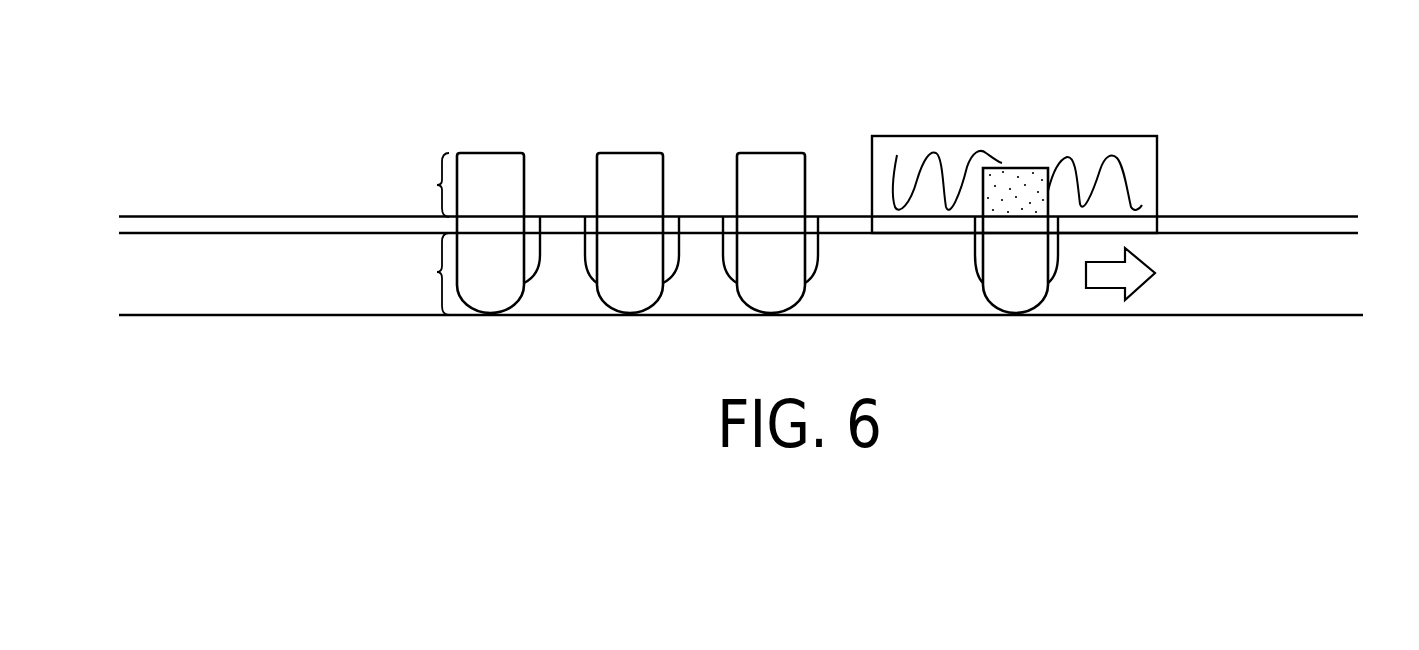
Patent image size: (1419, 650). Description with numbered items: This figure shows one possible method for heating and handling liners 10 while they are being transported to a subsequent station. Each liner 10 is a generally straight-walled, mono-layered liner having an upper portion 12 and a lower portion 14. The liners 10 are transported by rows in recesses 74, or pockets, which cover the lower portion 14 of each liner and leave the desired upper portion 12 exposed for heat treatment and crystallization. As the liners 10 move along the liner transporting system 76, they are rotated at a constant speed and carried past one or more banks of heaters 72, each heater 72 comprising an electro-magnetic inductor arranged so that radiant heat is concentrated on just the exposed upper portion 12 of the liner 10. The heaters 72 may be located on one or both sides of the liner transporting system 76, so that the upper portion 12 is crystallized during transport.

The liner 10 is at (497, 180).
The upper portion 12 is at (424, 185).
The lower portion 14 is at (424, 274).
The heater 72 is at (1130, 175).
The recess 74 is at (818, 250).
The liner transporting system 76 is at (1320, 86).